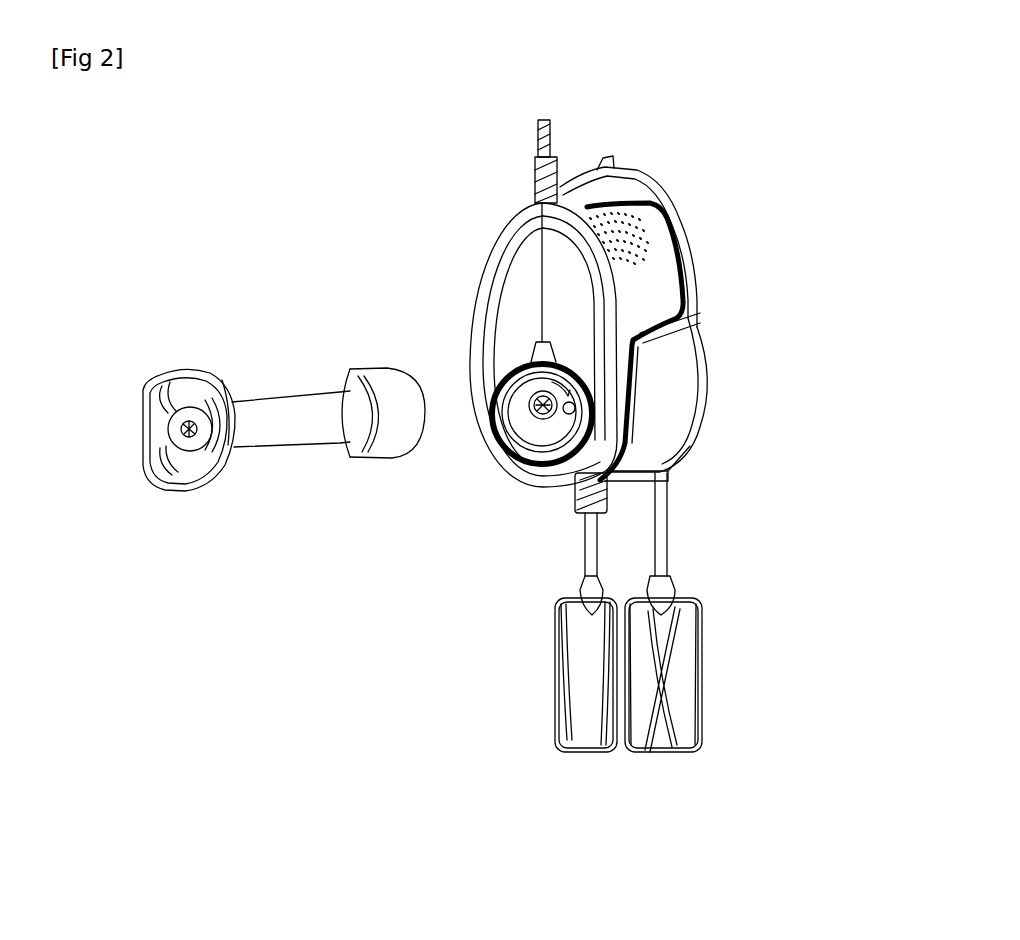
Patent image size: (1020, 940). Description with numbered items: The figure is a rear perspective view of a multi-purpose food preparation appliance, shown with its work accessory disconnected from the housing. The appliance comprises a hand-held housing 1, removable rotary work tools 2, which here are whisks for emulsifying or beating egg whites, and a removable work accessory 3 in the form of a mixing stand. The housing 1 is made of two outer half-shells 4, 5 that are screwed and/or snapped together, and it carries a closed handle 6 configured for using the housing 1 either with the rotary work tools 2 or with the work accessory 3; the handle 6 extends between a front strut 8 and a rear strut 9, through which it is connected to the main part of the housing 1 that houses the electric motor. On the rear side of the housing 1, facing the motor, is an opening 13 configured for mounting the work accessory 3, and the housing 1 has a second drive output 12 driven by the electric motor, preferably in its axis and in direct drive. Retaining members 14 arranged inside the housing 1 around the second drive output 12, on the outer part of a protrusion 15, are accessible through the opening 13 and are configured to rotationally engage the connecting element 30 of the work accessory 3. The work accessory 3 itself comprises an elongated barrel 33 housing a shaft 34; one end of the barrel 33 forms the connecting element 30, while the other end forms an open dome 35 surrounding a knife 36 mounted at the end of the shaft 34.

The hand-held housing 1 is at (762, 418).
The removable rotary work tools 2 is at (555, 782).
The removable work accessory 3 is at (251, 412).
The outer half-shell 4 is at (688, 378).
The outer half-shell 5 is at (474, 330).
The handle 6 is at (583, 187).
The front strut 8 is at (688, 267).
The rear strut 9 is at (540, 273).
The second drive output 12 is at (540, 425).
The opening 13 is at (530, 405).
The retaining members 14 is at (588, 382).
The protrusion 15 is at (577, 422).
The connecting element 30 is at (386, 376).
The elongated barrel 33 is at (308, 408).
The shaft 34 is at (185, 429).
The open dome 35 is at (213, 397).
The knife 36 is at (178, 418).